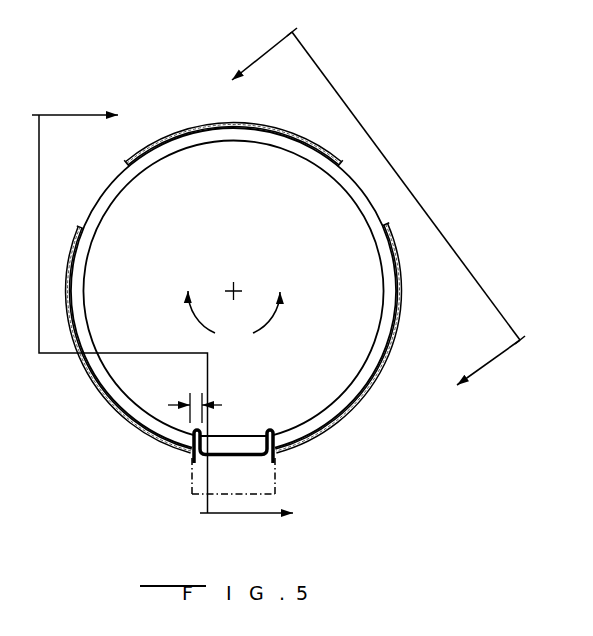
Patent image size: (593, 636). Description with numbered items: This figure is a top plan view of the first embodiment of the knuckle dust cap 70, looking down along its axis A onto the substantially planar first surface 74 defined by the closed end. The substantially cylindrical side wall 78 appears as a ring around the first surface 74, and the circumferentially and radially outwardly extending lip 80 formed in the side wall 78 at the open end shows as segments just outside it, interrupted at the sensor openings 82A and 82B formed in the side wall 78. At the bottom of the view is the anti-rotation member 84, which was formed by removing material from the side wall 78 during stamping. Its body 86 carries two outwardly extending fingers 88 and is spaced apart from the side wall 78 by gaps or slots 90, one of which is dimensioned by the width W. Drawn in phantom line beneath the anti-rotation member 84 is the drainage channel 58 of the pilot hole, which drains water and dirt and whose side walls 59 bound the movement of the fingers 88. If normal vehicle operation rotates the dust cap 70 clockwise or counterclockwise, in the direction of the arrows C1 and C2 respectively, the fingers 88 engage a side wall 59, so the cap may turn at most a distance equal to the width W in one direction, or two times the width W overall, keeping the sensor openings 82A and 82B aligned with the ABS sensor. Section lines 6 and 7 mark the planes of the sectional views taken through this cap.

The dust cap 70 is at (188, 96).
The first surface 74 is at (217, 218).
The side wall 78 is at (277, 140).
The lip 80 is at (130, 162).
The sensor opening 82A is at (80, 224).
The sensor opening 82B is at (387, 221).
The anti-rotation member 84 is at (240, 462).
The body 86 is at (243, 435).
The fingers 88 is at (204, 455).
The slots 90 is at (163, 425).
The drainage channel 58 is at (218, 494).
The side wall of the drainage channel 59 is at (190, 478).
The axis A is at (231, 283).
The arrow C1 is at (194, 318).
The arrow C2 is at (276, 322).
The width of the slot W is at (174, 402).
The section line 6- 6 is at (165, 313).
The section line 7- 7 is at (370, 216).